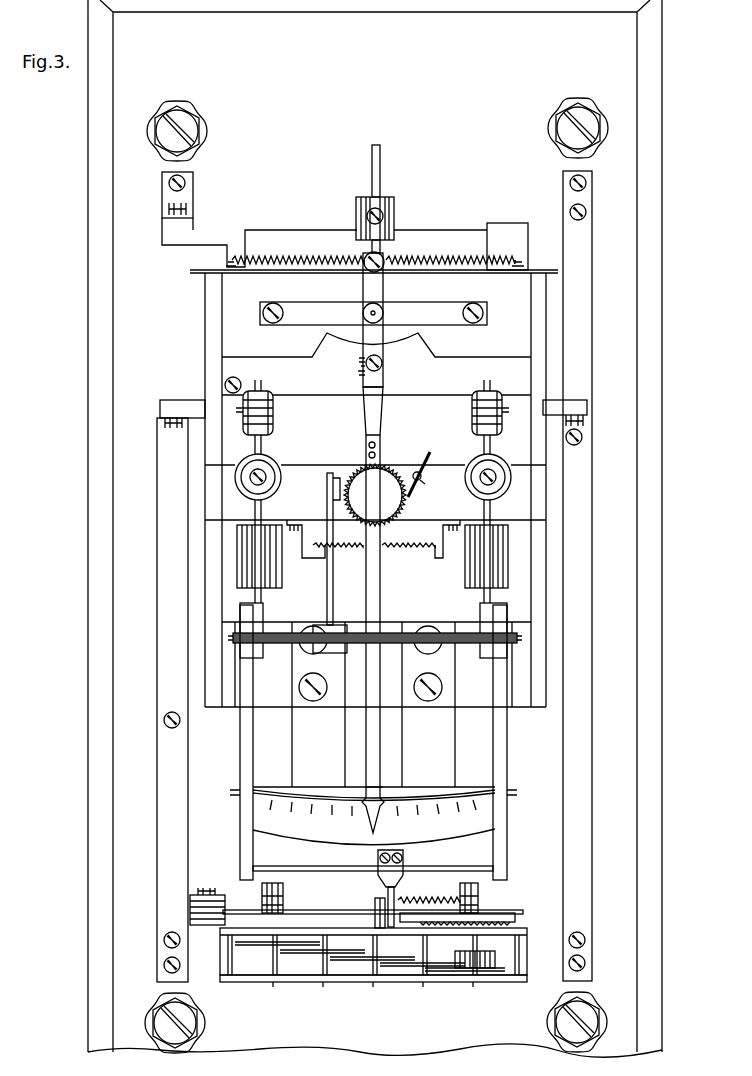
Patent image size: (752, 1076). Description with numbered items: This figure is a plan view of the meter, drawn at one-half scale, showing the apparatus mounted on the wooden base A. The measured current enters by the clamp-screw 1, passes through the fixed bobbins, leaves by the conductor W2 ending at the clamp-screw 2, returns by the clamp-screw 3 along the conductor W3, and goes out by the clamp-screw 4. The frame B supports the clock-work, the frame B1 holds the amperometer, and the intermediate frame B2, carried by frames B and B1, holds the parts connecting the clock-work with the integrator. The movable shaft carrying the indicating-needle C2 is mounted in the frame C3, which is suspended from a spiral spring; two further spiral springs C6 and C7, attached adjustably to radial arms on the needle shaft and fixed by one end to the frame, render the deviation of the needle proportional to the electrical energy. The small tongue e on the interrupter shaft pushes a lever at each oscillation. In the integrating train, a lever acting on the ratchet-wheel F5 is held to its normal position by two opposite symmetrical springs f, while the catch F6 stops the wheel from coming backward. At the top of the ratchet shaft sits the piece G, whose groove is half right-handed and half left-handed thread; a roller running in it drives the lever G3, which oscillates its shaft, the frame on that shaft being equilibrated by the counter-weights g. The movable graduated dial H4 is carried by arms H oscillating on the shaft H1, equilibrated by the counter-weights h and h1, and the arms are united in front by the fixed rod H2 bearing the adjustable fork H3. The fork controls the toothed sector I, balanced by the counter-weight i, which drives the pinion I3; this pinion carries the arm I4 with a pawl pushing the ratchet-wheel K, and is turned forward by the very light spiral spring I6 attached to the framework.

The wooden base A is at (374, 560).
The clamp-screw 1 is at (252, 172).
The clamp-screw 2 is at (181, 1023).
The clamp-screw 3 is at (569, 1022).
The clamp-screw 4 is at (578, 116).
The conductor W2 is at (165, 588).
The conductor W3 is at (583, 380).
The frame B is at (374, 636).
The frame B1 is at (376, 310).
The intermediate frame B2 is at (375, 492).
The indicating-needle C2 is at (383, 446).
The frame C3 is at (383, 295).
The spiral spring C6 is at (316, 258).
The spiral spring C7 is at (446, 258).
The tongue e is at (368, 449).
The springs f is at (373, 539).
The counter-weights g is at (379, 579).
The counter-weights h is at (373, 467).
The counter-weights h1 is at (273, 428).
The grooved piece G is at (375, 495).
The lever G3 is at (333, 600).
The ratchet-wheel F5 is at (417, 493).
The catch F6 is at (424, 469).
The arms H is at (246, 764).
The shaft H1 is at (326, 653).
The fixed rod H2 is at (278, 868).
The adjustable fork H3 is at (390, 888).
The movable graduated dial H4 is at (322, 838).
The counter-weight i is at (207, 902).
The toothed sector I is at (330, 912).
The pinion I3 is at (478, 905).
The arm I4 is at (492, 926).
The spiral spring I6 is at (412, 906).
The ratchet-wheel K is at (515, 921).